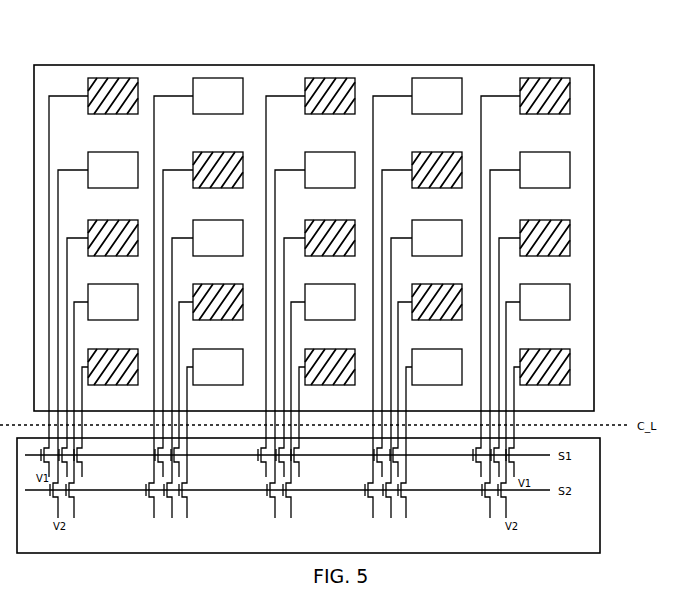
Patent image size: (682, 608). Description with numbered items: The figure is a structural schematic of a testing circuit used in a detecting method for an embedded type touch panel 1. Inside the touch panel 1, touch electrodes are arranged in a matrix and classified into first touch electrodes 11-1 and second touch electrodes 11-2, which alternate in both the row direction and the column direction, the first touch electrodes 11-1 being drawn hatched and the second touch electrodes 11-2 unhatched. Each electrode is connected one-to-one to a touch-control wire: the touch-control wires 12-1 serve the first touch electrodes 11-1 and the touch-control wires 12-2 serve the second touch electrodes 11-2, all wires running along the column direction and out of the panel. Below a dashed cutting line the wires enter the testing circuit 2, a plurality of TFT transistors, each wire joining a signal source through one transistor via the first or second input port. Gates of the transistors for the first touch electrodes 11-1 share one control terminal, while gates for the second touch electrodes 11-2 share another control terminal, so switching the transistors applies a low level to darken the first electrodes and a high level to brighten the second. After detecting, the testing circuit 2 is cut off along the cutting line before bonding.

The embedded type touch panel 1 is at (562, 63).
The testing circuit 2 is at (600, 490).
The first touch electrodes 11-1 is at (330, 77).
The second touch electrodes 11-2 is at (217, 77).
The touch-control wires corresponding to first touch electrodes 12-1 is at (278, 93).
The touch-control wires corresponding to second touch electrodes 12-2 is at (173, 95).